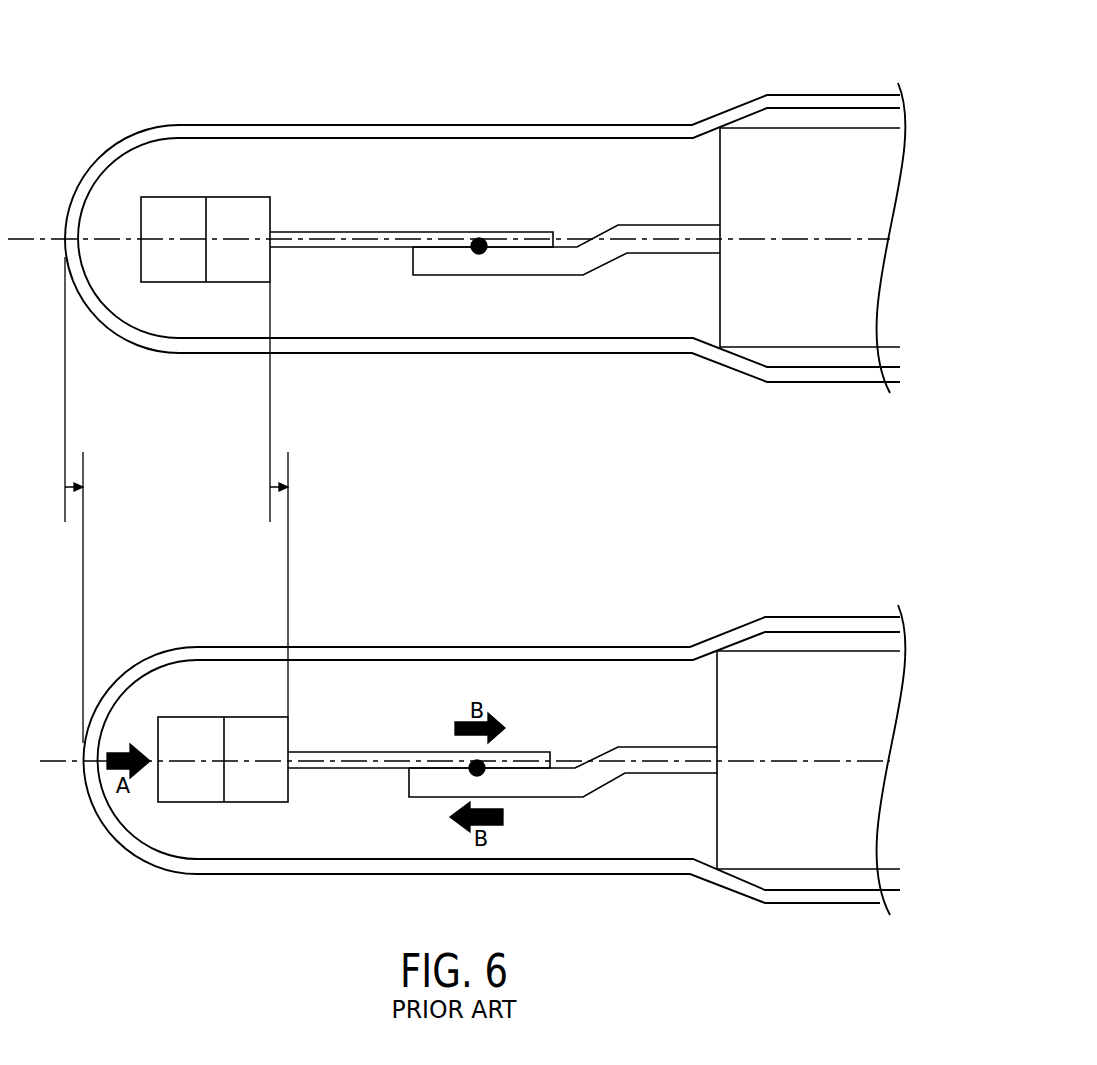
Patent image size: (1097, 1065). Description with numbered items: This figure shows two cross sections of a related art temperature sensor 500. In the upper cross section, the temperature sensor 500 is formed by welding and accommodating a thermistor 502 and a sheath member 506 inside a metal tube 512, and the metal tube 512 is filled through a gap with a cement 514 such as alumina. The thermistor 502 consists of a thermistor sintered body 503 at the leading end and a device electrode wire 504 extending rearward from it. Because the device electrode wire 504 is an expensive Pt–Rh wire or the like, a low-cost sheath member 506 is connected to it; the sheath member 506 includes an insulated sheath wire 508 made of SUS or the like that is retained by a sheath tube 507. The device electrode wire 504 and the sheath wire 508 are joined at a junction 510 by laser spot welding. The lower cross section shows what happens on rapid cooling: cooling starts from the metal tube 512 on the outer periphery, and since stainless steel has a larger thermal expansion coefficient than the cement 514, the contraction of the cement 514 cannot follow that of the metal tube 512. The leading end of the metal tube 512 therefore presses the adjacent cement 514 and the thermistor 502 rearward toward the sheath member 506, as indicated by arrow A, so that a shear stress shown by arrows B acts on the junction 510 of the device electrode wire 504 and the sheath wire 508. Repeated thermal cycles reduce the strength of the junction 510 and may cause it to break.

The temperature sensor 500 is at (58, 72).
The thermistor 502 is at (347, 323).
The thermistor sintered body 503 is at (173, 270).
The device electrode wire 504 is at (338, 243).
The sheath member 506 is at (656, 282).
The sheath tube 507 is at (788, 327).
The sheath wire 508 is at (680, 247).
The junction 510 is at (479, 254).
The metal tube 512 is at (515, 130).
The cement 514 is at (342, 147).